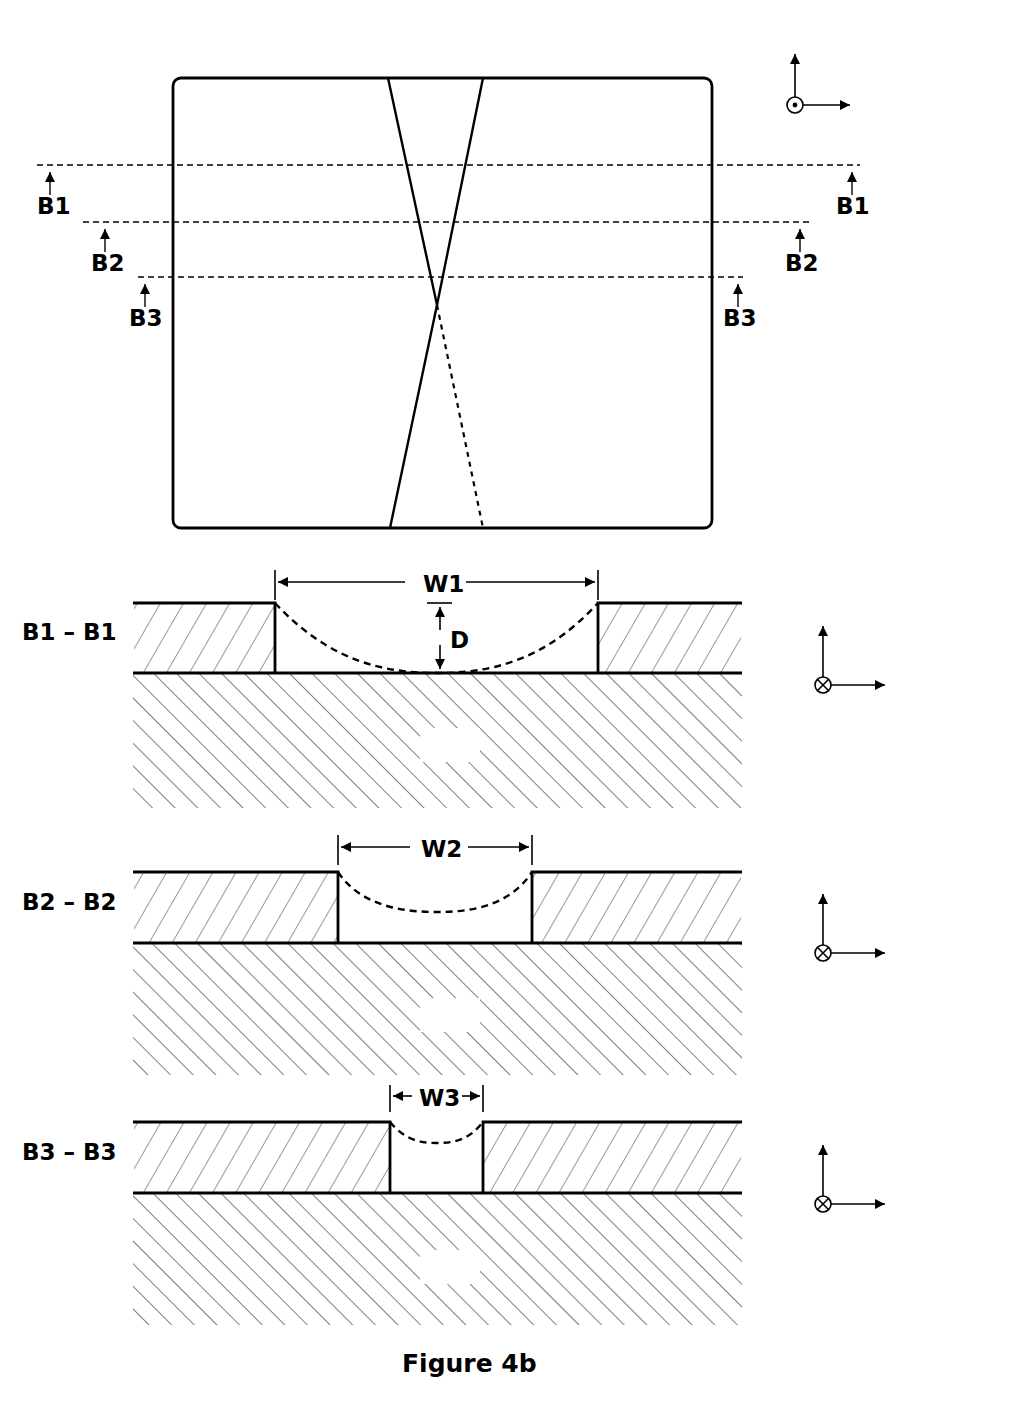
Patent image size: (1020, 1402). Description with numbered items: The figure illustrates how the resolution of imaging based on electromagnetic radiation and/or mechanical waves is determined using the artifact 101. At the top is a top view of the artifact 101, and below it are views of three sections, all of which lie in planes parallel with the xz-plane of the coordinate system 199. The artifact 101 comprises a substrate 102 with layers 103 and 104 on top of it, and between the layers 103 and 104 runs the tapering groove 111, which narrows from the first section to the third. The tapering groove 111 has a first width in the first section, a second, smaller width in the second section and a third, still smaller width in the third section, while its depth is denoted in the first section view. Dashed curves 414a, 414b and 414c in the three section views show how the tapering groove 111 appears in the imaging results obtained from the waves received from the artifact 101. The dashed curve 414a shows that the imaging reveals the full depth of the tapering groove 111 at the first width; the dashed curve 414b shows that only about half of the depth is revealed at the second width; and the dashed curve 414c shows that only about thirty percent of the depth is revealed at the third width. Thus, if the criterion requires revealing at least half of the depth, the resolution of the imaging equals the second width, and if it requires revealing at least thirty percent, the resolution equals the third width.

The artifact 101 is at (217, 52).
The substrate 102 is at (459, 137).
The layer 103 is at (304, 347).
The layer 104 is at (629, 347).
The tapering groove 111 is at (458, 92).
The coordinate system 199 is at (849, 84).
The dashed curve 414a is at (300, 640).
The dashed curve 414b is at (361, 896).
The dashed curve 414c is at (470, 1138).